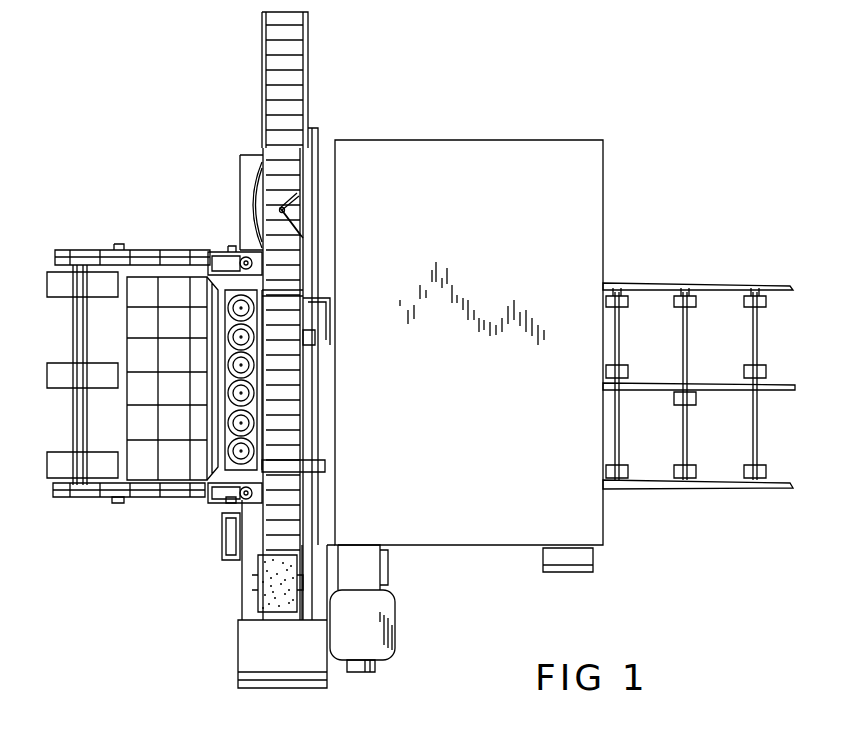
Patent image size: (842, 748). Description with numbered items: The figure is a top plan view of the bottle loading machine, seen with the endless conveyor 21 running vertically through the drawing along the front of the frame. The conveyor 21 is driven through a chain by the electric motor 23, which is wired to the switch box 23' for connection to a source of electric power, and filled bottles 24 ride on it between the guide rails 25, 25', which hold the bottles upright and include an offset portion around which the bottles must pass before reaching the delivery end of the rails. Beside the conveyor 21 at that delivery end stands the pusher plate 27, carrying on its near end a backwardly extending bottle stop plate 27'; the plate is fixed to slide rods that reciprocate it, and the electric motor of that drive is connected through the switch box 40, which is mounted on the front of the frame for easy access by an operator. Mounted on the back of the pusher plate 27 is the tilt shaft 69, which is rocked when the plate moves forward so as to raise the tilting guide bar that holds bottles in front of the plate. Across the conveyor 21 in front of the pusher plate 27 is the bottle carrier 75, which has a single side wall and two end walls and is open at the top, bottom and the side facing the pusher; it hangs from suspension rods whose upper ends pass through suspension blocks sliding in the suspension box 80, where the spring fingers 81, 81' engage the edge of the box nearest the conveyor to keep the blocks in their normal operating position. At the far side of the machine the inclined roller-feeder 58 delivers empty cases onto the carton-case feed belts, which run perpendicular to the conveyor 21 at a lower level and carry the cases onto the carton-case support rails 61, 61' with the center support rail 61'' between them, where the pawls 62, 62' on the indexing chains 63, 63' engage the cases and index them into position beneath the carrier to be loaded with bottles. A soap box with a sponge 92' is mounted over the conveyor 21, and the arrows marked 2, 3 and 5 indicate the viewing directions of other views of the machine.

The sectioning apparatus housing 2 is at (626, 568).
The view arrow 3 is at (34, 375).
The view arrow 5 is at (656, 247).
The endless conveyor 21 is at (296, 97).
The electric motor 23 is at (379, 608).
The switch box 23' is at (542, 571).
The filled bottles 24 is at (238, 340).
The guide rail 25 is at (262, 80).
The guide rail 25' is at (332, 280).
The pusher plate 27 is at (339, 329).
The bottle stop plate 27' is at (340, 298).
The switch box 40 is at (238, 566).
The inclined roller-feeder 58 is at (636, 490).
The carton-case support rail 61 is at (82, 445).
The carton-case support rail 61' is at (82, 298).
The center support rail 61'' is at (84, 375).
The pawl 62 is at (154, 512).
The pawl 62' is at (153, 235).
The indexing chain 63 is at (129, 505).
The indexing chain 63' is at (132, 242).
The tilt shaft 69 is at (320, 433).
The bottle carrier 75 is at (210, 418).
The suspension box 80 is at (218, 255).
The spring finger 81 is at (209, 536).
The spring finger 81' is at (254, 204).
The sponge 92' is at (247, 590).